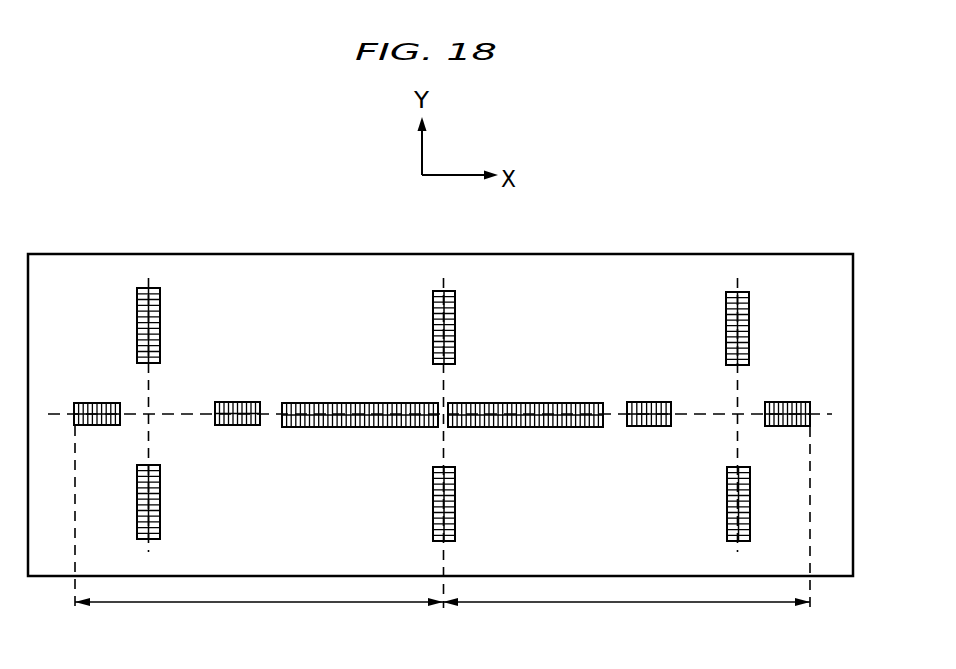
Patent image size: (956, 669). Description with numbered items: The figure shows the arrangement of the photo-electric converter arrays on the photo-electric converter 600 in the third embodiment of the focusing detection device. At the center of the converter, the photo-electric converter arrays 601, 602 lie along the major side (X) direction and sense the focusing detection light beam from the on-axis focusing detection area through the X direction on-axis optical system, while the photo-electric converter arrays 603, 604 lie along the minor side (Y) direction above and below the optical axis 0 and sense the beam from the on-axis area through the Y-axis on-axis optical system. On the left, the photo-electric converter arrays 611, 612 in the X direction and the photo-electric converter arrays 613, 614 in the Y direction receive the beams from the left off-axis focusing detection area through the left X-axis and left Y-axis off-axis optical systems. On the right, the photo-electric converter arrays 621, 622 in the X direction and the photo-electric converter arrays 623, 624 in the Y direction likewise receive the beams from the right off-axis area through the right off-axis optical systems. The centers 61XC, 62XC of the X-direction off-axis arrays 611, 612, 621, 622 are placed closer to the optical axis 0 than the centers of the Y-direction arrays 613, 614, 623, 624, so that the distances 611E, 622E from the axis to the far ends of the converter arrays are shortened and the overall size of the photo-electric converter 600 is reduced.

The photo-electric converter 600 is at (446, 435).
The photo-electric converter array 601 is at (360, 404).
The photo-electric converter array 602 is at (525, 404).
The photo-electric converter array 603 is at (464, 327).
The photo-electric converter array 604 is at (463, 504).
The photo-electric converter array 611 is at (101, 402).
The photo-electric converter array 612 is at (239, 402).
The photo-electric converter array 613 is at (167, 325).
The photo-electric converter array 614 is at (167, 502).
The photo-electric converter array 621 is at (652, 402).
The photo-electric converter array 622 is at (789, 402).
The photo-electric converter array 623 is at (755, 328).
The photo-electric converter array 624 is at (757, 504).
The center of the left X-direction converter arrays 61XC is at (167, 414).
The center of the right X-direction converter arrays 62XC is at (724, 414).
The optical axis 0 is at (438, 428).
The distance to the far end of the left converter arrays 611E is at (259, 529).
The distance to the far end of the right converter arrays 622E is at (626, 531).